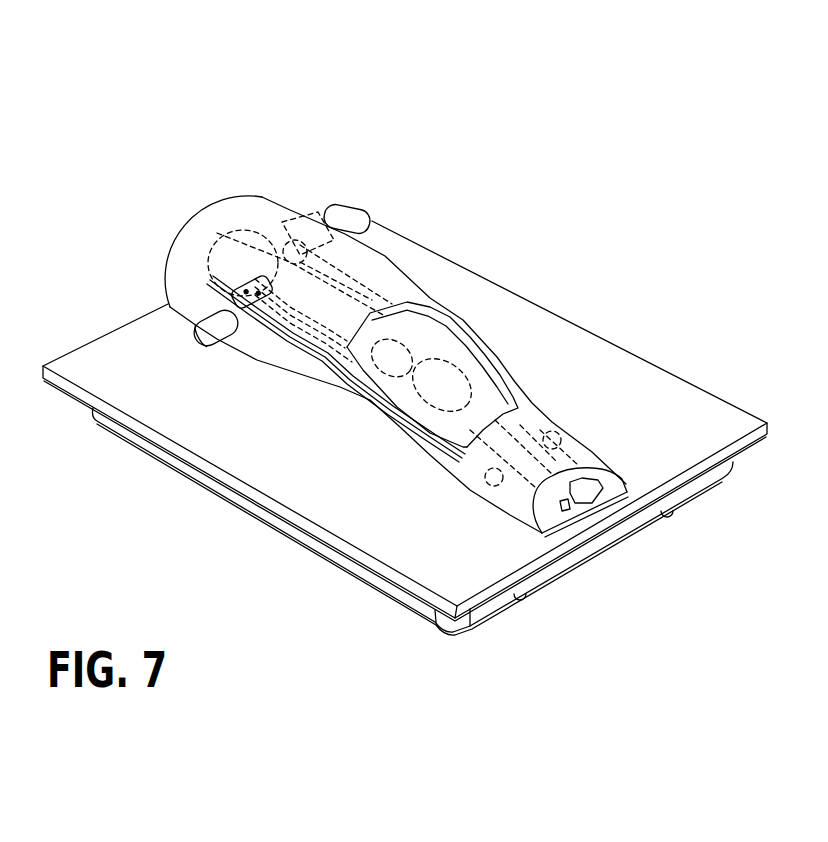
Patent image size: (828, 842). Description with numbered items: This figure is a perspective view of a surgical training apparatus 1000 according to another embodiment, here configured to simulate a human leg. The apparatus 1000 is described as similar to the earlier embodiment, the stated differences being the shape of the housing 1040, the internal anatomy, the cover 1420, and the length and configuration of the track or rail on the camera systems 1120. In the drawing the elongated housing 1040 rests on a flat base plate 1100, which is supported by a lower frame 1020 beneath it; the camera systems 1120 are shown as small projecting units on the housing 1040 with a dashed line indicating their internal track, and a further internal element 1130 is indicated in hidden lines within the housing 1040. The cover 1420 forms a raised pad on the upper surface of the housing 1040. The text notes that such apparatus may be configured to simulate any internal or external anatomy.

The surgical training apparatus 1000 is at (100, 74).
The base frame 1020 is at (428, 613).
The housing 1040 is at (257, 212).
The base plate 1100 is at (628, 378).
The camera systems 1120 is at (231, 260).
The internal drive element 1130 is at (354, 298).
The cover 1420 is at (468, 362).